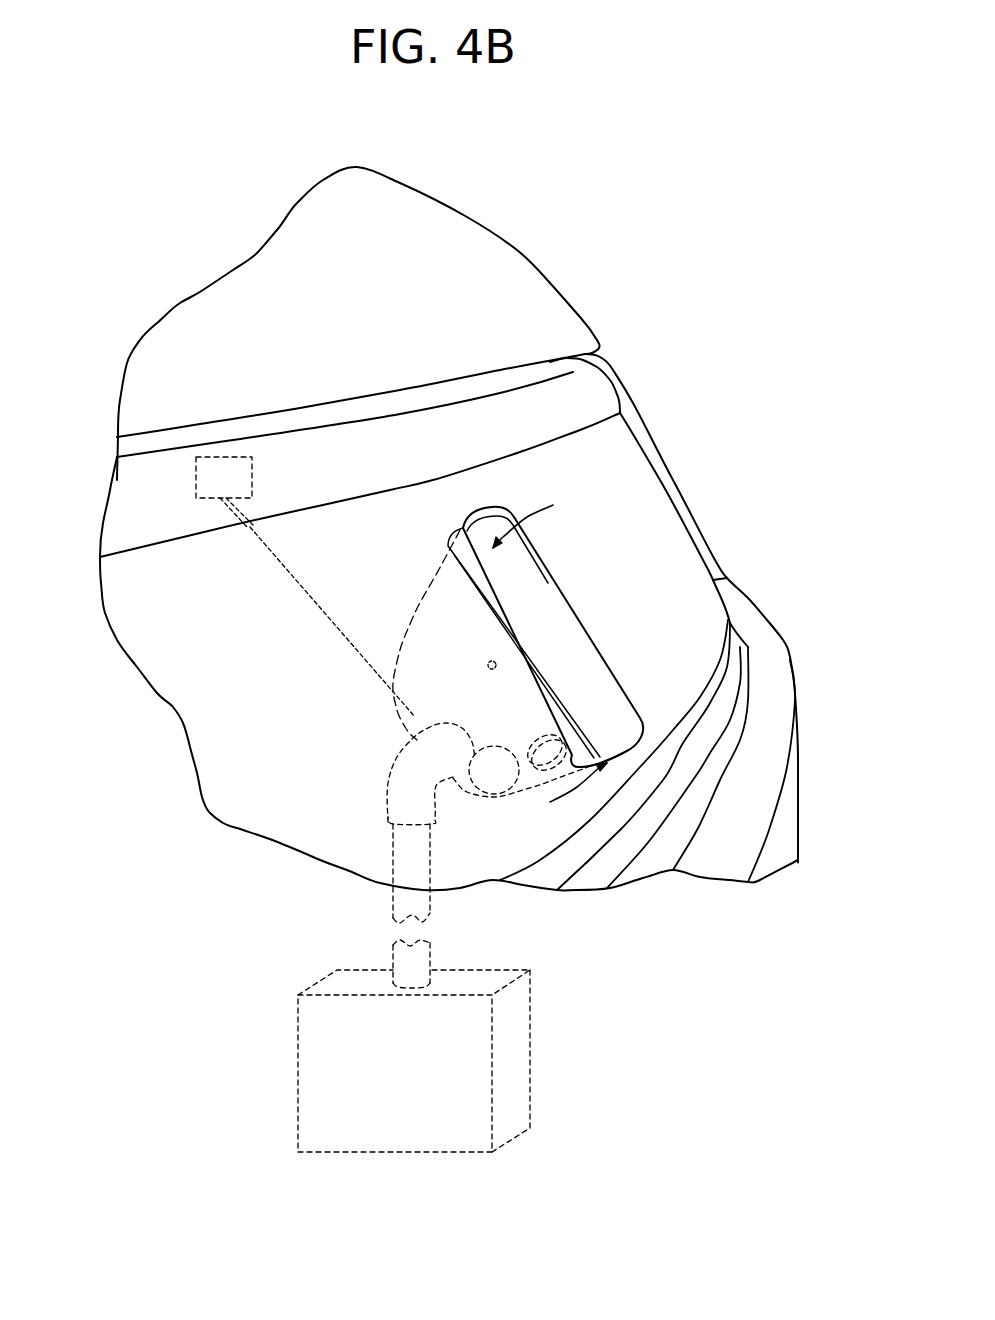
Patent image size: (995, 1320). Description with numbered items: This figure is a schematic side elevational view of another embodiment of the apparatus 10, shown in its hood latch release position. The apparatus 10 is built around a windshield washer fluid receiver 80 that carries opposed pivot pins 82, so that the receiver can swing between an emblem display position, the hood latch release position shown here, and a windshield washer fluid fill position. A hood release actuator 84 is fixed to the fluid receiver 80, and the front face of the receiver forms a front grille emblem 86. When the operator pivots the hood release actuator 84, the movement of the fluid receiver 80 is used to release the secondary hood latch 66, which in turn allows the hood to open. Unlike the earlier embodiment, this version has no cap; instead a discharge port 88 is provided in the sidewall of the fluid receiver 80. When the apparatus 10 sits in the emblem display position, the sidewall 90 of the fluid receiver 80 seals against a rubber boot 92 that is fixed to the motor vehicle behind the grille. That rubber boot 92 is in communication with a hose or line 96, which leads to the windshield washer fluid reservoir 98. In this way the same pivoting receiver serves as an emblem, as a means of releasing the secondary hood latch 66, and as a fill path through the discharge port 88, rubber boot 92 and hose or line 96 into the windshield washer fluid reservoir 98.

The apparatus 10 is at (673, 335).
The secondary hood latch 66 is at (196, 480).
The windshield washer fluid receiver 80 is at (433, 703).
The pivot pins 82 is at (490, 663).
The hood release actuator 84 is at (623, 723).
The front grille emblem 86 is at (567, 630).
The discharge port 88 is at (542, 762).
The sidewall 90 is at (490, 790).
The rubber boot 92 is at (388, 790).
The hose or line 96 is at (387, 900).
The windshield washer fluid reservoir 98 is at (310, 1052).